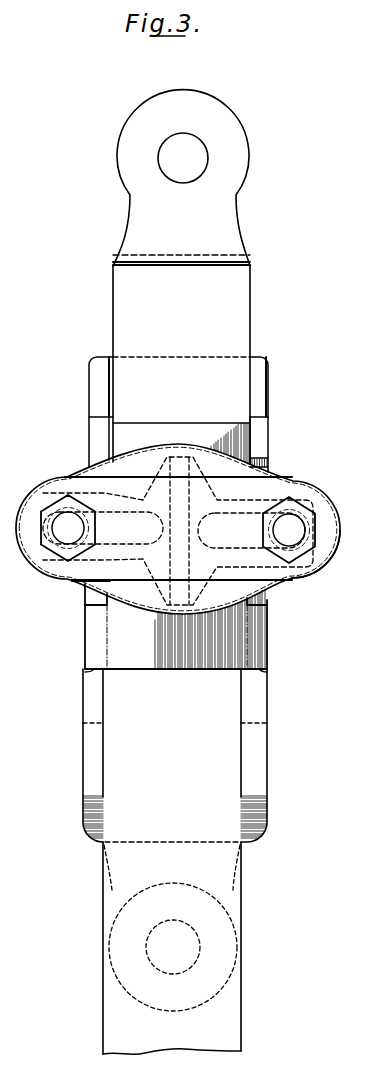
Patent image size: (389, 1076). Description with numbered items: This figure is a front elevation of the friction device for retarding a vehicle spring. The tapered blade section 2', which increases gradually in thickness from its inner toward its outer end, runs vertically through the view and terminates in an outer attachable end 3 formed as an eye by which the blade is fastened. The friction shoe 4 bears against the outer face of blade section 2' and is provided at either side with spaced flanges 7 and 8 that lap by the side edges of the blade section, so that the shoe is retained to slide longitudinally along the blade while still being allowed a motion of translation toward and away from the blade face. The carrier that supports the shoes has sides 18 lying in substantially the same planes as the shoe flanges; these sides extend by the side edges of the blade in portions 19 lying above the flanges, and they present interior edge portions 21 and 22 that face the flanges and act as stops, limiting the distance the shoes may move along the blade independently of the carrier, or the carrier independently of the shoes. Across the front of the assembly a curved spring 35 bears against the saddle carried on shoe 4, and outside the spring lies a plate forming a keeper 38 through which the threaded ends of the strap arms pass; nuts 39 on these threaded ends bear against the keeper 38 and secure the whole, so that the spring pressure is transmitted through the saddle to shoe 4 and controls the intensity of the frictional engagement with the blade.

The outer attachable end 3 is at (181, 178).
The blade section 2' is at (181, 359).
The extending portion of the carrier side 19 is at (91, 379).
The interior edge portion 21 is at (95, 421).
The friction shoe 4 is at (200, 424).
The flange 7 is at (90, 464).
The nut 39 is at (55, 548).
The curved spring 35 is at (100, 585).
The keeper 38 is at (306, 578).
The flange 8 is at (85, 636).
The interior edge portion 22 is at (85, 673).
The carrier side 18 is at (84, 751).